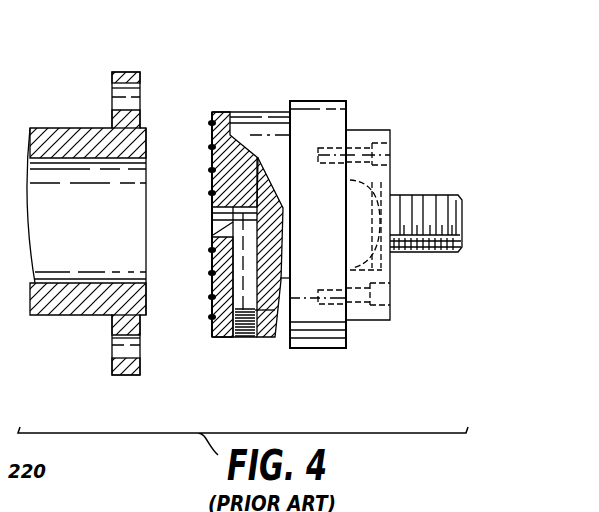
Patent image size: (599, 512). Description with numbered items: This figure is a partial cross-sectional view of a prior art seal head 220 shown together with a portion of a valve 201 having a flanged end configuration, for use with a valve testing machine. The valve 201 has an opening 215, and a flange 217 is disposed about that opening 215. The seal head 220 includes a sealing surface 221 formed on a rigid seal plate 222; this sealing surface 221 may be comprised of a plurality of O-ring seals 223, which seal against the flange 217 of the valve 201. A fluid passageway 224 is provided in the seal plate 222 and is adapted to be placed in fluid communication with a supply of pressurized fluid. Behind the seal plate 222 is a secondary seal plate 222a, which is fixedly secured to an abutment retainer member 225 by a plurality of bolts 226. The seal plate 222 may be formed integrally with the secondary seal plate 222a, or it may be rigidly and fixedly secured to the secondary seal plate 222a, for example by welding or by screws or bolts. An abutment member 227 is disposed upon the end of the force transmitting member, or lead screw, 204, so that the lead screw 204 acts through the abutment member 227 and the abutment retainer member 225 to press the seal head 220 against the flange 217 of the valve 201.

The valve 201 is at (53, 124).
The opening 215 is at (70, 175).
The flange 217 is at (112, 358).
The seal head 220 is at (250, 106).
The sealing surface 221 is at (197, 160).
The seal plate 222 is at (275, 340).
The secondary seal plate 222a is at (350, 345).
The O-ring seals 223 is at (207, 108).
The fluid passageway 224 is at (250, 340).
The abutment retainer member 225 is at (383, 130).
The bolts 226 is at (390, 297).
The abutment member 227 is at (370, 203).
The lead screw 204 is at (463, 245).